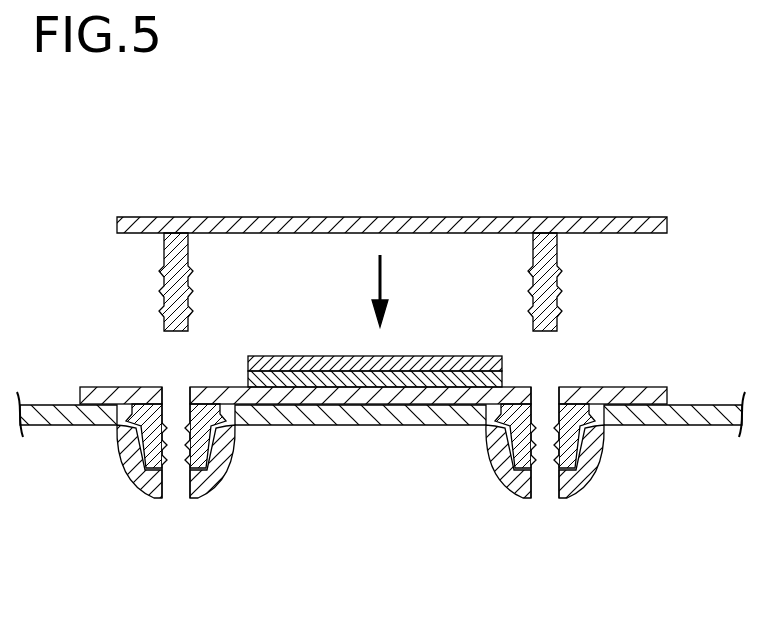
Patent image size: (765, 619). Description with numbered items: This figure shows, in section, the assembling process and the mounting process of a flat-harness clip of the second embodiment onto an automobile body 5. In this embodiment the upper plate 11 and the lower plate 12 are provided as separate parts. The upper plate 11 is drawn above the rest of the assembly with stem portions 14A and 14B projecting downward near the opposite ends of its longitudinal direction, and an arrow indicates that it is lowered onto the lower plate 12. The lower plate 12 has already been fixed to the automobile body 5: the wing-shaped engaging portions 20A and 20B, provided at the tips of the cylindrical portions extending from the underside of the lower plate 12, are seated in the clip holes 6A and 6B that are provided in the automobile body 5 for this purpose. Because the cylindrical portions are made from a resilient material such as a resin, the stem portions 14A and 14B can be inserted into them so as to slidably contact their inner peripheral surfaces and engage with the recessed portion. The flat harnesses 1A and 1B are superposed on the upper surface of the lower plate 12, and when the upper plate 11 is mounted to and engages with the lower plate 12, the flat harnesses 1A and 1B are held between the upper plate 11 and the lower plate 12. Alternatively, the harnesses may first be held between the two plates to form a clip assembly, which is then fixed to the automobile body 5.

The upper plate 11 is at (470, 217).
The stem portion 14A is at (557, 262).
The stem portion 14B is at (188, 263).
The flat harness 1A is at (503, 380).
The flat harness 1B is at (460, 355).
The lower plate 12 is at (650, 387).
The automobile body 5 is at (58, 425).
The clip hole 6A is at (487, 422).
The clip hole 6B is at (118, 428).
The wing-shaped engaging portion 20A is at (587, 482).
The wing-shaped engaging portion 20B is at (218, 478).